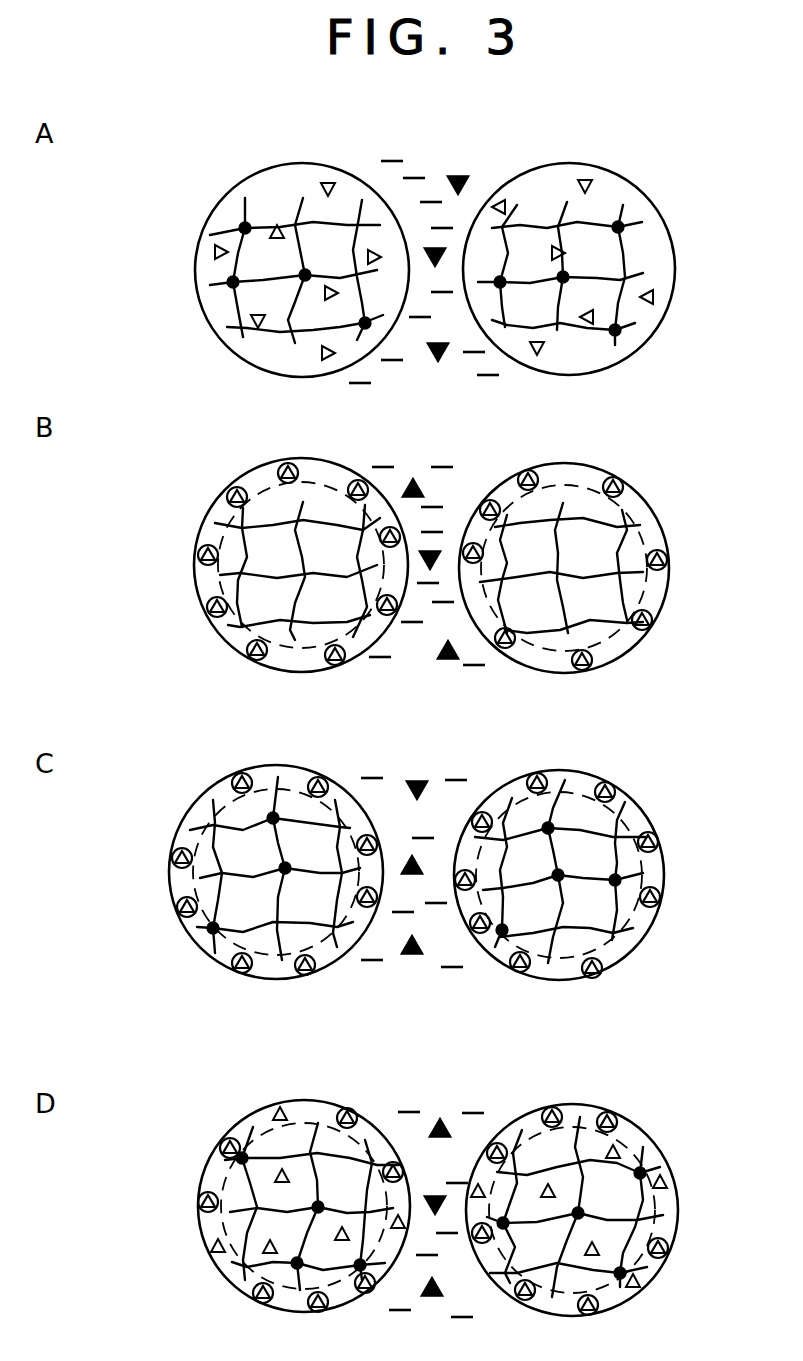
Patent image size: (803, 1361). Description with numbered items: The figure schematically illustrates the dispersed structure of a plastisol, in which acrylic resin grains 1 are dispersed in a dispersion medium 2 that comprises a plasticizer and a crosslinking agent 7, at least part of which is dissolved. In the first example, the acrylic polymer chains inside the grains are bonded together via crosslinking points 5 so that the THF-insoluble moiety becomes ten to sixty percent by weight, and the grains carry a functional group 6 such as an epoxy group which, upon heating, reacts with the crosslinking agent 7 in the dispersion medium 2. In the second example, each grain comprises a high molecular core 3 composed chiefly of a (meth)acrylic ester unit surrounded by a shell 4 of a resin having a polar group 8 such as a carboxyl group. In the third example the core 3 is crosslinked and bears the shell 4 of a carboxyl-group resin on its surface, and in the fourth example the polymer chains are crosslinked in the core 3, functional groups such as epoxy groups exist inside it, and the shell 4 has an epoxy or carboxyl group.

The acrylic resin grains 1 is at (677, 263).
The dispersion medium 2 is at (413, 170).
The core 3 is at (578, 505).
The shell 4 is at (643, 505).
The crosslinking points 5 is at (622, 223).
The functional group 6 is at (331, 179).
The crosslinking agent 7 is at (462, 174).
The polar group 8 is at (592, 655).